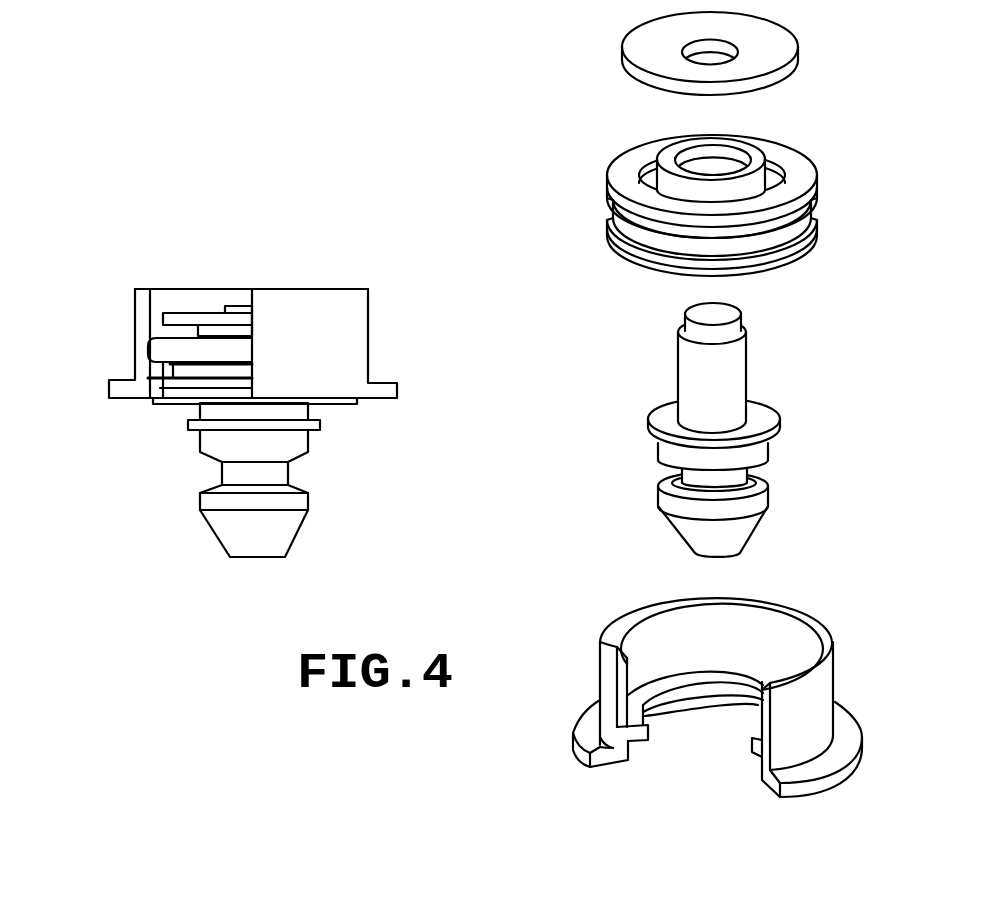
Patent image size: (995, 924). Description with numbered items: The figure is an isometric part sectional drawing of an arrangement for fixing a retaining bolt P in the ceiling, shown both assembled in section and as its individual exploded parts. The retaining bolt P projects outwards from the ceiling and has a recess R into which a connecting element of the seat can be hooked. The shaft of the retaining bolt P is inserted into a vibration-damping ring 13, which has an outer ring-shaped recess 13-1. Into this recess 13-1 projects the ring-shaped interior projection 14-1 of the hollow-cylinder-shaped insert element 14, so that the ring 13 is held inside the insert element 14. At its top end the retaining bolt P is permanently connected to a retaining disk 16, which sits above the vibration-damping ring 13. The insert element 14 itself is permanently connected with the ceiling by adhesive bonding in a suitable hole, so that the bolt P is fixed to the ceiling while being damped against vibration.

The insert element 14 is at (360, 330).
The ring-shaped interior projection 14-1 is at (165, 378).
The vibration-damping ring 13 is at (152, 353).
The outer ring-shaped recess 13-1 is at (623, 223).
The retaining disk 16 is at (178, 317).
The recess R is at (303, 468).
The retaining bolt P is at (277, 535).